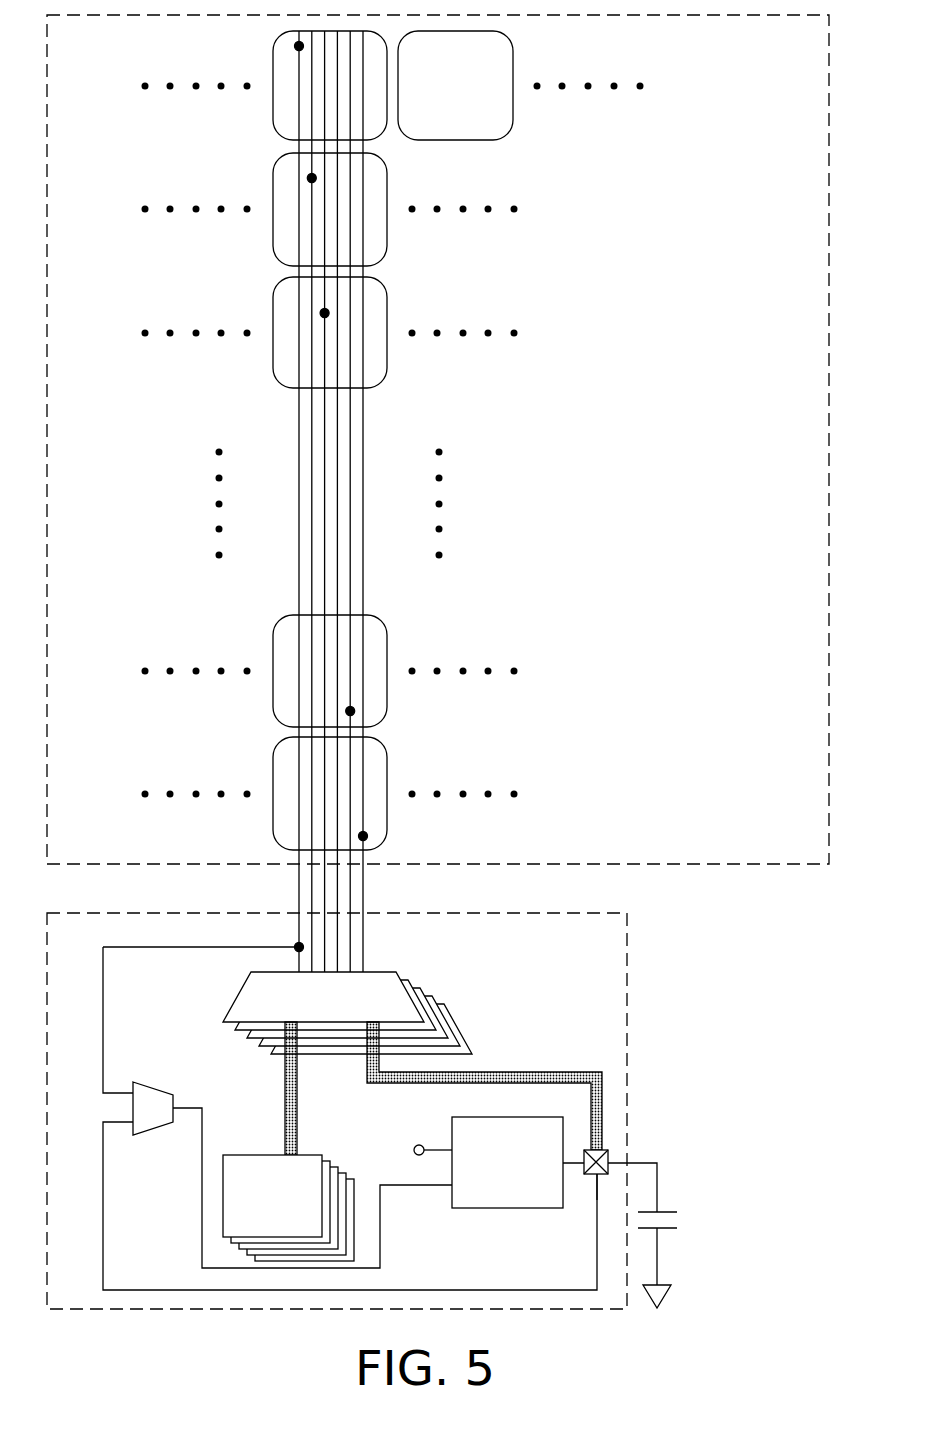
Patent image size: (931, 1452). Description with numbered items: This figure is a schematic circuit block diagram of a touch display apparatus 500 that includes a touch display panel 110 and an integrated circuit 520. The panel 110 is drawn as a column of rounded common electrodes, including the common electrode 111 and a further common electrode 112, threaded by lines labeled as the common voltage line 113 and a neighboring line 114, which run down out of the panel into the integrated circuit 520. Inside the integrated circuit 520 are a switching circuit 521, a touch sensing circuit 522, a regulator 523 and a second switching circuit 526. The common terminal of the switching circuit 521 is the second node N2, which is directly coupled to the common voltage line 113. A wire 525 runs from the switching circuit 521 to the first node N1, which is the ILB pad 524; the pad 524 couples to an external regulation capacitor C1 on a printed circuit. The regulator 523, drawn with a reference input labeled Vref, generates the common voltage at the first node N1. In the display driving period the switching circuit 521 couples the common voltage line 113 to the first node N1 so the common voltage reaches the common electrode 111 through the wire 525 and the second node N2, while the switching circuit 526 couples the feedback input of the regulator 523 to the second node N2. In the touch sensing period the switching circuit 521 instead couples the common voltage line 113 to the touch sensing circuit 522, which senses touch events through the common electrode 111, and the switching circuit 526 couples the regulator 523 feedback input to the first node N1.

The touch display apparatus 500 is at (703, 1298).
The touch display panel 110 is at (715, 866).
The common electrode 111 is at (273, 51).
The touch electrode 112 is at (273, 763).
The common voltage line 113 is at (299, 585).
The sensing line 114 is at (363, 585).
The integrated circuit 520 is at (627, 1037).
The switching circuit 521 is at (237, 997).
The touch sensing circuit 522 is at (252, 1155).
The regulator 523 is at (510, 1208).
The ILB pad 524 is at (610, 1152).
The wire 525 is at (522, 1072).
The switching circuit 526 is at (155, 1089).
The first node N1 is at (596, 1176).
The second node N2 is at (203, 1005).
The regulation capacitor C1 is at (683, 1216).
The reference voltage Vref is at (410, 1147).